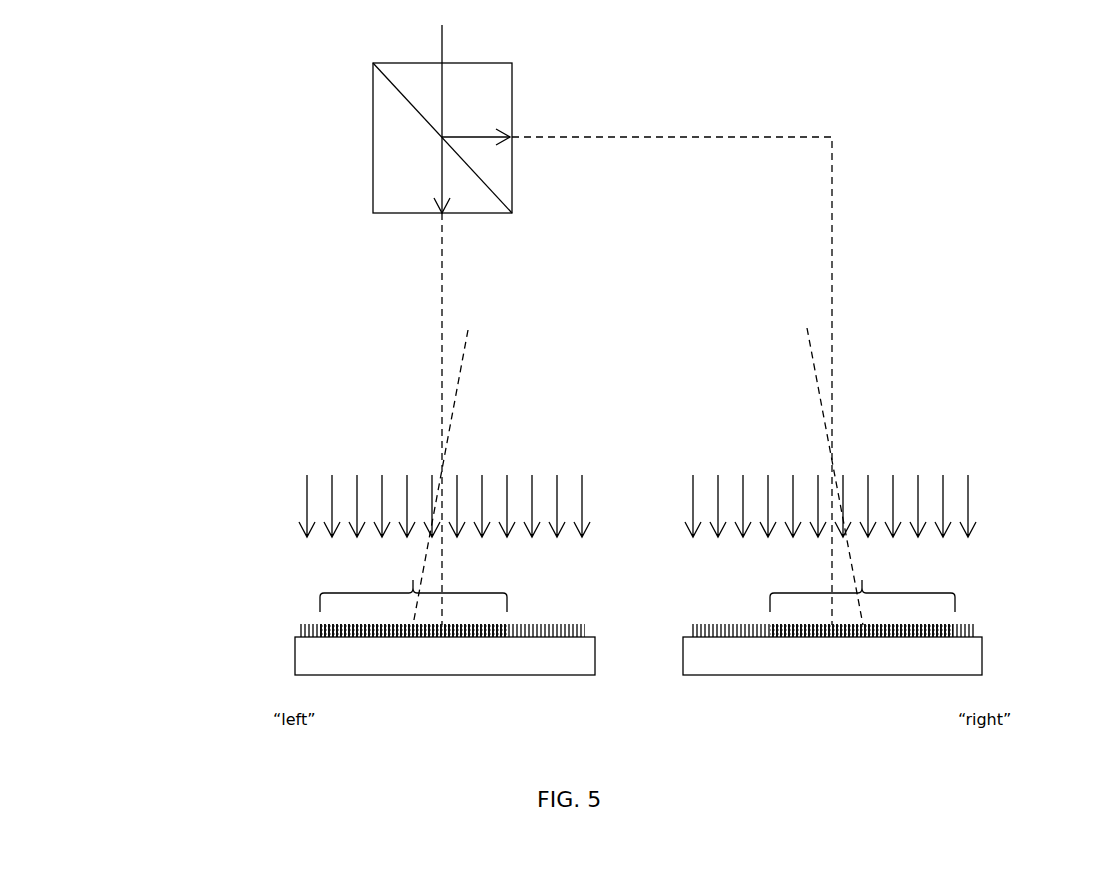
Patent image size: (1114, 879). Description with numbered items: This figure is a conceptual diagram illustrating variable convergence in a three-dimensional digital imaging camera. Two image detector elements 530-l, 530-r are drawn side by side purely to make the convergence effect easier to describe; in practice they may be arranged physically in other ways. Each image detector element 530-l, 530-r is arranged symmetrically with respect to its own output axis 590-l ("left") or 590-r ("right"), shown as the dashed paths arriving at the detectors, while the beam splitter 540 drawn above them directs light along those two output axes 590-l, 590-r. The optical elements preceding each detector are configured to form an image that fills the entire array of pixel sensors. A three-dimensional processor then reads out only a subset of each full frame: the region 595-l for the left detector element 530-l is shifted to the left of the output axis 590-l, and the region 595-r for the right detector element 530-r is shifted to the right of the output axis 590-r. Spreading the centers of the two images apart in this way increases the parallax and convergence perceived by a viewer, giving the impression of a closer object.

The beam splitter 540 is at (373, 153).
The output axis 590-l is at (442, 281).
The output axis 590-r is at (832, 252).
The left imaging region 595-l is at (413, 590).
The right imaging region 595-r is at (862, 590).
The image detector element 530-l is at (295, 661).
The image detector element 530-r is at (982, 661).